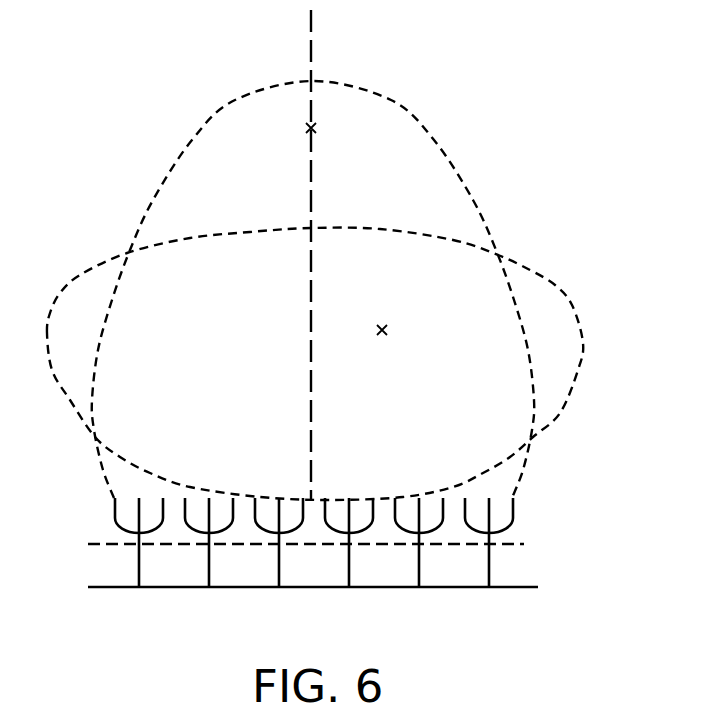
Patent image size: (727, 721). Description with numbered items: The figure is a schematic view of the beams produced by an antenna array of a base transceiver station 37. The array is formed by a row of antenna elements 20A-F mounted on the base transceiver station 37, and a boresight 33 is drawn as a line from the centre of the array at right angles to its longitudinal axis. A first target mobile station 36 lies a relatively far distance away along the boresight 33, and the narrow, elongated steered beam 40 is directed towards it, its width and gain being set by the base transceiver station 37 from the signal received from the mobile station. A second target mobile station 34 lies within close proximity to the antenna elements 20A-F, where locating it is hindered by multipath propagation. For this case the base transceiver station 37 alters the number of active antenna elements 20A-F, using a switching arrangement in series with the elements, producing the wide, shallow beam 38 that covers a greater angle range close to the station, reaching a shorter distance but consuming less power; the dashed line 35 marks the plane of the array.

The antenna elements 20A-F is at (395, 588).
The boresight 33 is at (314, 284).
The second target mobile station 34 is at (390, 330).
The reference plane 35 is at (533, 545).
The first target mobile station 36 is at (318, 128).
The base transceiver station 37 is at (202, 588).
The light distribution region 38 is at (535, 273).
The steered beam 40 is at (470, 200).